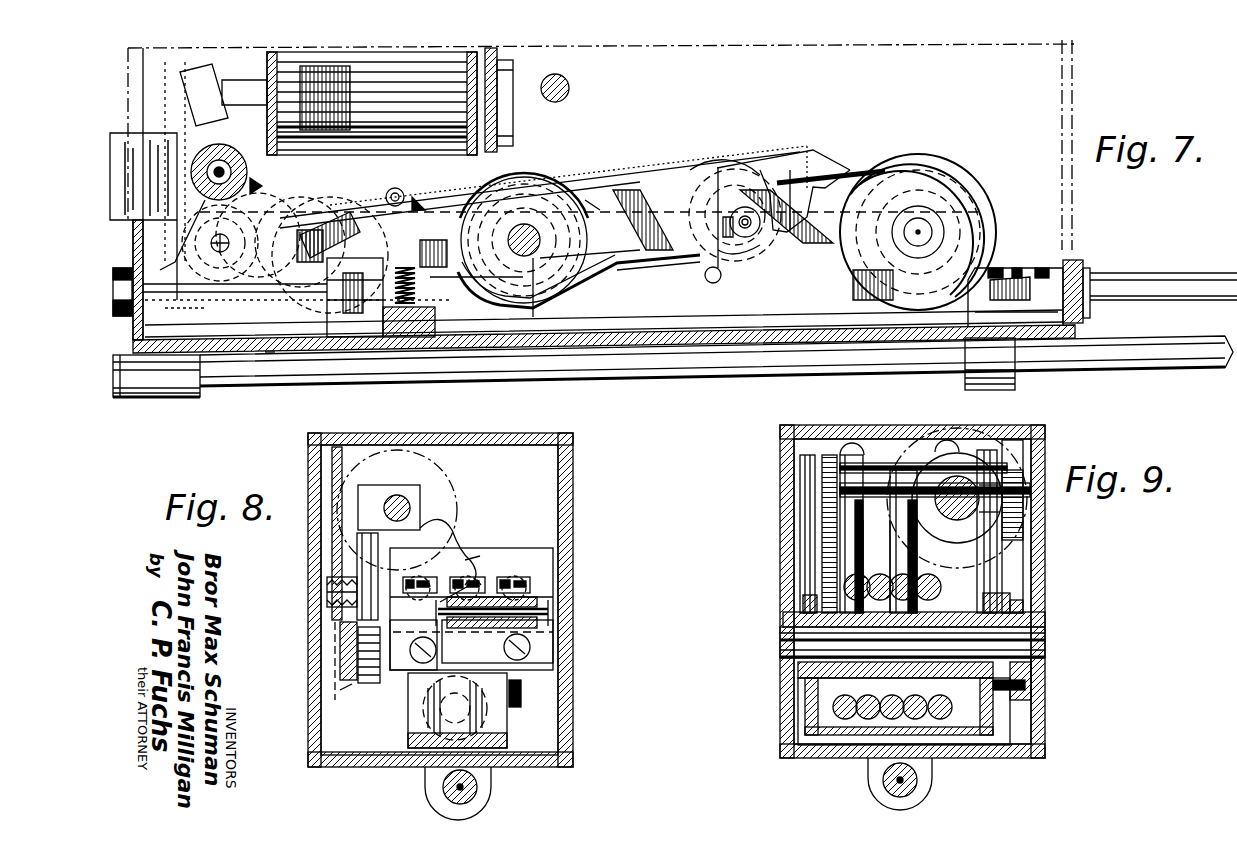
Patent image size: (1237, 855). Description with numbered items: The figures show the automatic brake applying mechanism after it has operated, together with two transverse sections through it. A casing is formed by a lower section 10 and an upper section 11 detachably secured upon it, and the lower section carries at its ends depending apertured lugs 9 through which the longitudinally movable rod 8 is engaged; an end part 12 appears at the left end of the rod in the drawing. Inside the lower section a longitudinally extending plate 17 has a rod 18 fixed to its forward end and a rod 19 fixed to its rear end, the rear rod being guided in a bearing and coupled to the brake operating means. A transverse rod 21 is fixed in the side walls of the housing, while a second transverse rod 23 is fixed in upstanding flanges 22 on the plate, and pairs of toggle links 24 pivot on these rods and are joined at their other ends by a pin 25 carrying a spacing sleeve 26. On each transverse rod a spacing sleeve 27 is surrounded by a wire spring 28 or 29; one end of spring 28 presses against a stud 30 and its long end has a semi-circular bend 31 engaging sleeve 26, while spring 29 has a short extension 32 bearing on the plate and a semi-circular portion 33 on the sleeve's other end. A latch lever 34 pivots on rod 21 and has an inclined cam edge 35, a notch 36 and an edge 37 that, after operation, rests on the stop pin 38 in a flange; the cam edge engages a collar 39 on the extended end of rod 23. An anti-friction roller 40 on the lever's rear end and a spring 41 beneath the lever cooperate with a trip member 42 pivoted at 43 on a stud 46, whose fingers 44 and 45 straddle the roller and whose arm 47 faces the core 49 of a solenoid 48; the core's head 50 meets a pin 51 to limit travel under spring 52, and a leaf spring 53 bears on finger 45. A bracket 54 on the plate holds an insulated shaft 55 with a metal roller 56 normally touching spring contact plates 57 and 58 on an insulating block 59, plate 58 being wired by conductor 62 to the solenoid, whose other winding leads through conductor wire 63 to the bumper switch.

In FIG. 7, the longitudinally movable rod 8 is at (1212, 374).
In FIG. 8, the longitudinally movable rod 8 is at (480, 786).
In FIG. 9, the longitudinally movable rod 8 is at (920, 778).
In FIG. 7, the apertured ears or lugs 9 is at (1000, 390).
In FIG. 8, the apertured ears or lugs 9 is at (440, 790).
In FIG. 9, the apertured ears or lugs 9 is at (880, 792).
In FIG. 7, the lower section of casing or housing 10 is at (655, 340).
In FIG. 8, the lower section of casing or housing 10 is at (560, 760).
In FIG. 9, the lower section of casing or housing 10 is at (830, 758).
In FIG. 7, the upper section of housing 11 is at (1072, 92).
In FIG. 8, the upper section of housing 11 is at (573, 463).
In FIG. 9, the upper section of housing 11 is at (1045, 432).
In FIG. 7, the end cap 12 is at (128, 400).
In FIG. 7, the longitudinally extending plate 17 is at (560, 322).
In FIG. 8, the longitudinally extending plate 17 is at (507, 740).
In FIG. 9, the longitudinally extending plate 17 is at (993, 735).
In FIG. 7, the rod 18 is at (1208, 273).
In FIG. 7, the rod 19 is at (190, 308).
In FIG. 8, the rod 19 is at (470, 708).
In FIG. 7, the transverse rod 21 is at (535, 228).
In FIG. 9, the transverse rod 21 is at (1045, 640).
In FIG. 7, the upstanding flanges 22 is at (855, 186).
In FIG. 9, the upstanding flanges 22 is at (1010, 712).
In FIG. 7, the transverse rod 23 is at (925, 232).
In FIG. 7, the toggle links 24 is at (745, 214).
In FIG. 9, the toggle links 24 is at (815, 518).
In FIG. 7, the pin 25 is at (718, 168).
In FIG. 9, the pin 25 is at (800, 492).
In FIG. 7, the spacing sleeve 26 is at (700, 190).
In FIG. 9, the spacing sleeve 26 is at (920, 468).
In FIG. 7, the spacing sleeve 27 is at (535, 258).
In FIG. 9, the spacing sleeve 27 is at (834, 704).
In FIG. 7, the wire spring 28 is at (522, 178).
In FIG. 9, the wire spring 28 is at (912, 576).
In FIG. 7, the wire spring 29 is at (985, 192).
In FIG. 7, the stud 30 is at (303, 233).
In FIG. 7, the semi-circular bend 31 is at (700, 165).
In FIG. 9, the semi-circular bend 31 is at (948, 448).
In FIG. 7, the short extension 32 is at (975, 310).
In FIG. 9, the semi-circular portion 33 is at (852, 443).
In FIG. 7, the latch lever 34 is at (585, 200).
In FIG. 8, the latch lever 34 is at (335, 668).
In FIG. 9, the latch lever 34 is at (1020, 596).
In FIG. 7, the obliquely inclined cam edge 35 is at (800, 228).
In FIG. 7, the downwardly opening notch or recess 36 is at (748, 210).
In FIG. 7, the edge 37 is at (728, 238).
In FIG. 9, the edge 37 is at (1000, 668).
In FIG. 7, the stop pin 38 is at (690, 268).
In FIG. 9, the stop pin 38 is at (1010, 692).
In FIG. 7, the collar 39 is at (925, 222).
In FIG. 7, the anti-friction roller 40 is at (330, 200).
In FIG. 8, the anti-friction roller 40 is at (350, 688).
In FIG. 7, the spring 41 is at (405, 338).
In FIG. 7, the trip member 42 is at (180, 128).
In FIG. 8, the trip member 42 is at (432, 515).
In FIG. 7, the pivot 43 is at (232, 158).
In FIG. 8, the pivot 43 is at (327, 600).
In FIG. 7, the downwardly extending finger 44 is at (191, 240).
In FIG. 7, the second downwardly extending finger 45 is at (268, 355).
In FIG. 7, the stud or projection 46 is at (215, 294).
In FIG. 8, the stud or projection 46 is at (340, 634).
In FIG. 7, the transversely positioned arm 47 is at (208, 89).
In FIG. 8, the transversely positioned arm 47 is at (420, 497).
In FIG. 7, the solenoid 48 is at (372, 103).
In FIG. 8, the solenoid 48 is at (450, 462).
In FIG. 9, the solenoid 48 is at (881, 566).
In FIG. 7, the core 49 is at (505, 78).
In FIG. 8, the core 49 is at (397, 495).
In FIG. 9, the core 49 is at (1000, 488).
In FIG. 7, the head or flange 50 is at (500, 138).
In FIG. 9, the head or flange 50 is at (1000, 512).
In FIG. 7, the pin 51 is at (570, 85).
In FIG. 9, the pin 51 is at (1035, 495).
In FIG. 7, the spring 52 is at (315, 130).
In FIG. 7, the leaf spring 53 is at (332, 299).
In FIG. 8, the leaf spring 53 is at (378, 684).
In FIG. 7, the upstanding bracket 54 is at (345, 218).
In FIG. 8, the upstanding bracket 54 is at (540, 617).
In FIG. 7, the rod or shaft 55 is at (398, 188).
In FIG. 8, the rod or shaft 55 is at (522, 690).
In FIG. 7, the metal roller 56 is at (420, 198).
In FIG. 8, the metal roller 56 is at (530, 648).
In FIG. 8, the spring contact plate 57 is at (548, 580).
In FIG. 7, the spring contact plate 58 is at (262, 186).
In FIG. 8, the spring contact plate 58 is at (490, 588).
In FIG. 7, the insulating block 59 is at (263, 182).
In FIG. 8, the insulating block 59 is at (548, 590).
In FIG. 8, the conductor 62 is at (470, 560).
In FIG. 8, the conductor wire 63 is at (332, 548).